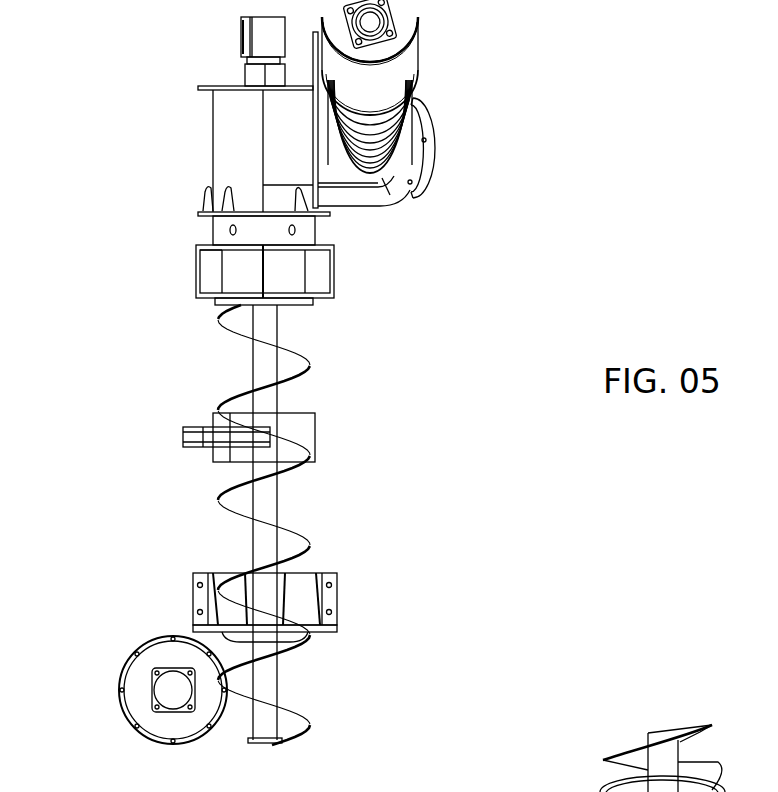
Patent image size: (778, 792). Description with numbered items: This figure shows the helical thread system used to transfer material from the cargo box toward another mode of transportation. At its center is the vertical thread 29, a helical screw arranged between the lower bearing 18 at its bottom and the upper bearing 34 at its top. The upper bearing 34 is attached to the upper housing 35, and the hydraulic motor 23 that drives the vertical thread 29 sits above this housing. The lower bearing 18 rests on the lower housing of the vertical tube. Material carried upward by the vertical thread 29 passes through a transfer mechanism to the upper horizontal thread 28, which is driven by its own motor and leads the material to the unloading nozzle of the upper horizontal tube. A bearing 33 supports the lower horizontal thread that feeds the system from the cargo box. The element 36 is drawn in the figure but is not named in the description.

The lower bearing 18 is at (312, 600).
The hydraulic motor 23 is at (263, 40).
The upper horizontal thread 28 is at (385, 147).
The vertical thread 29 is at (267, 500).
The bearing 33 is at (170, 690).
The upper bearing 34 is at (310, 279).
The upper housing 35 is at (240, 156).
The auger blade 36 is at (745, 791).